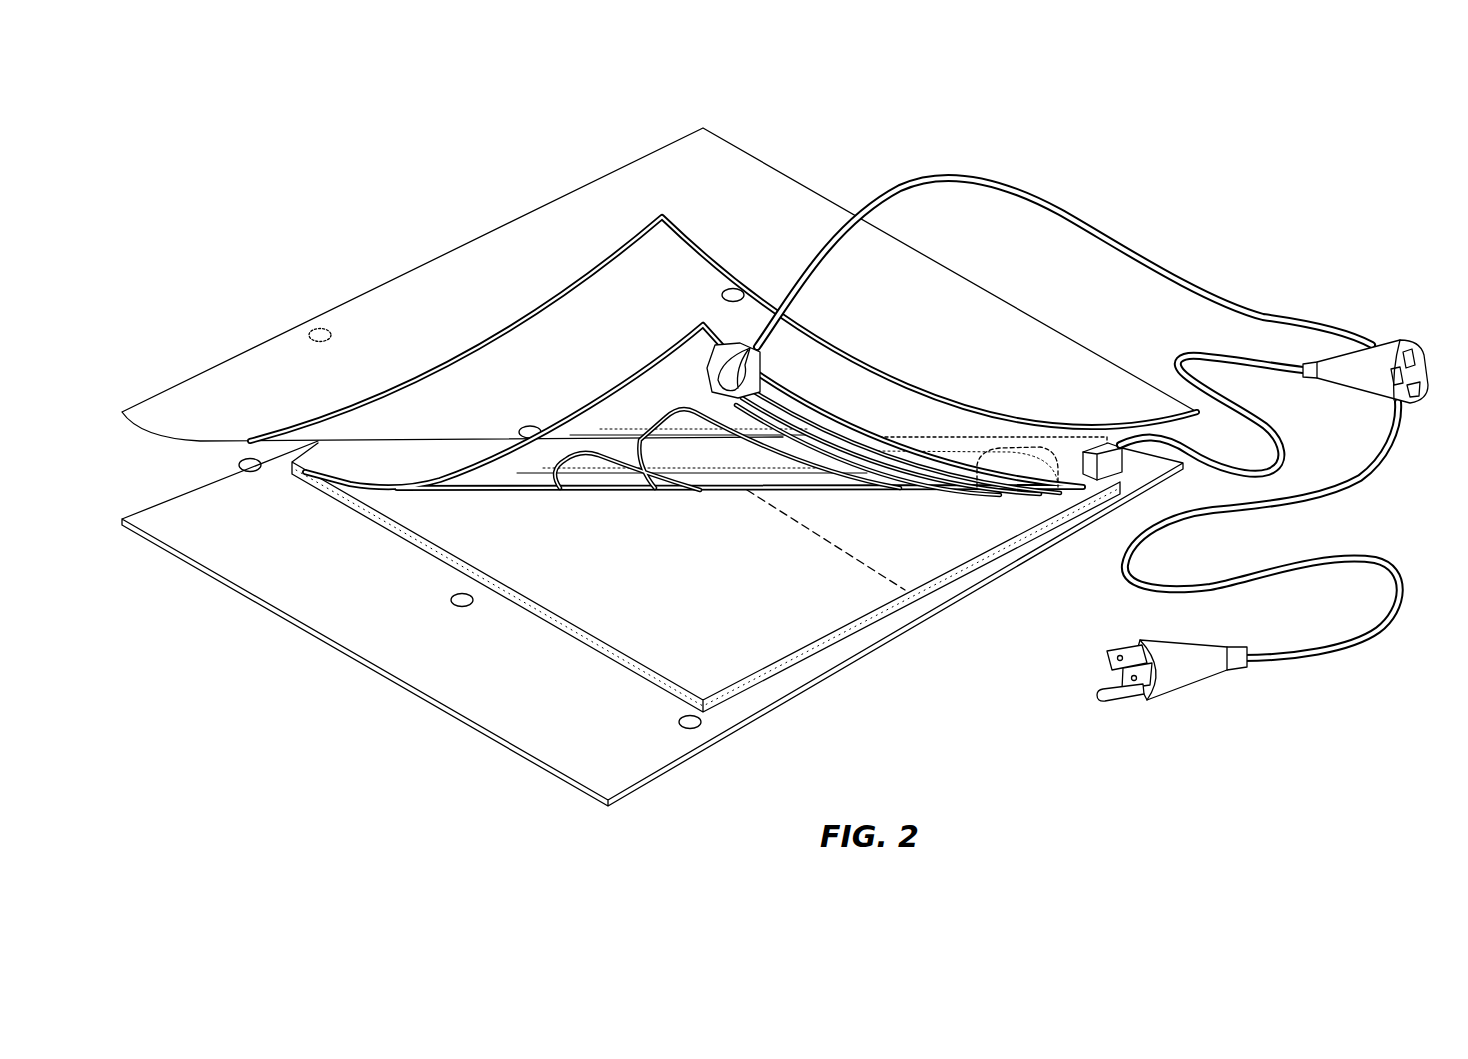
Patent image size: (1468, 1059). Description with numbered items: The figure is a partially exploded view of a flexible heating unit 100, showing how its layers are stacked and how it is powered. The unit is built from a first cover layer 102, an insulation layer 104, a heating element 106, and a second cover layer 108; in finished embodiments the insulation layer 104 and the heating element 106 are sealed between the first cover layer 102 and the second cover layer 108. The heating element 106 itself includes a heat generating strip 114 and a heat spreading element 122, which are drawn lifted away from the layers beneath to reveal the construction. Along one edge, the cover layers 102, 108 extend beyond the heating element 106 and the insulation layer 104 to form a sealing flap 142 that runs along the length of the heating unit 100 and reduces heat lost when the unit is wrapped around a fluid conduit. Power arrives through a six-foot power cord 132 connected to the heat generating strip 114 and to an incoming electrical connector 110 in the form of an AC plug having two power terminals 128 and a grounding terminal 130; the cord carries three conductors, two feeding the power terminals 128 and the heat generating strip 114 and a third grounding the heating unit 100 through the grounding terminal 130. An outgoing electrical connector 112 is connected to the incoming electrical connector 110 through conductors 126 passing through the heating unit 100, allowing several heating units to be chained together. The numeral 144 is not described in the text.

The heating unit 100 is at (787, 451).
The first cover layer 102 is at (782, 682).
The insulation layer 104 is at (729, 594).
The heating element 106 is at (567, 498).
The second cover layer 108 is at (363, 357).
The incoming electrical connector 110 is at (1183, 670).
The outgoing electrical connector 112 is at (1383, 350).
The heat generating strip 114 is at (797, 420).
The heat spreading element 122 is at (681, 381).
The conductors 126 is at (1093, 500).
The power terminals 128 is at (1130, 645).
The grounding terminal 130 is at (1108, 698).
The power cord 132 is at (1363, 483).
The sealing flap 142 is at (663, 770).
The hidden edge 144 is at (857, 557).